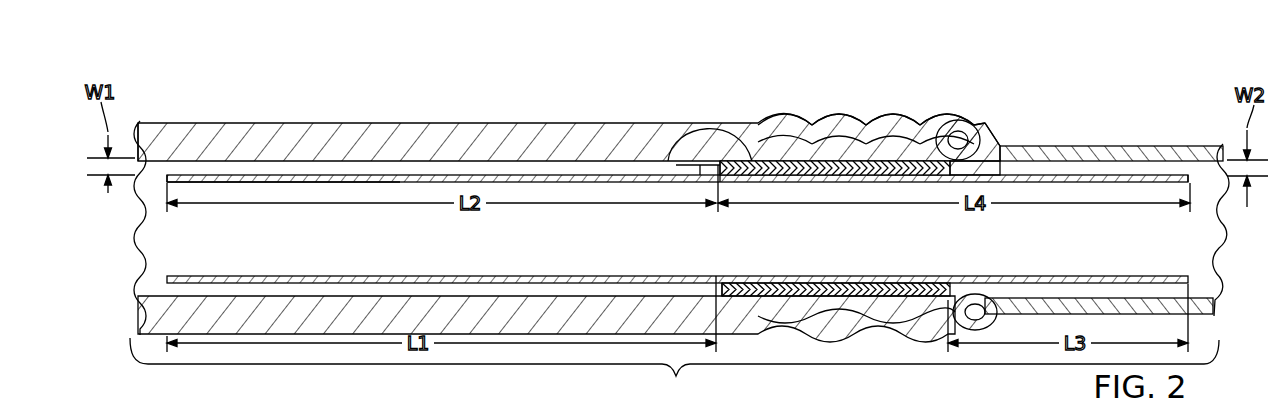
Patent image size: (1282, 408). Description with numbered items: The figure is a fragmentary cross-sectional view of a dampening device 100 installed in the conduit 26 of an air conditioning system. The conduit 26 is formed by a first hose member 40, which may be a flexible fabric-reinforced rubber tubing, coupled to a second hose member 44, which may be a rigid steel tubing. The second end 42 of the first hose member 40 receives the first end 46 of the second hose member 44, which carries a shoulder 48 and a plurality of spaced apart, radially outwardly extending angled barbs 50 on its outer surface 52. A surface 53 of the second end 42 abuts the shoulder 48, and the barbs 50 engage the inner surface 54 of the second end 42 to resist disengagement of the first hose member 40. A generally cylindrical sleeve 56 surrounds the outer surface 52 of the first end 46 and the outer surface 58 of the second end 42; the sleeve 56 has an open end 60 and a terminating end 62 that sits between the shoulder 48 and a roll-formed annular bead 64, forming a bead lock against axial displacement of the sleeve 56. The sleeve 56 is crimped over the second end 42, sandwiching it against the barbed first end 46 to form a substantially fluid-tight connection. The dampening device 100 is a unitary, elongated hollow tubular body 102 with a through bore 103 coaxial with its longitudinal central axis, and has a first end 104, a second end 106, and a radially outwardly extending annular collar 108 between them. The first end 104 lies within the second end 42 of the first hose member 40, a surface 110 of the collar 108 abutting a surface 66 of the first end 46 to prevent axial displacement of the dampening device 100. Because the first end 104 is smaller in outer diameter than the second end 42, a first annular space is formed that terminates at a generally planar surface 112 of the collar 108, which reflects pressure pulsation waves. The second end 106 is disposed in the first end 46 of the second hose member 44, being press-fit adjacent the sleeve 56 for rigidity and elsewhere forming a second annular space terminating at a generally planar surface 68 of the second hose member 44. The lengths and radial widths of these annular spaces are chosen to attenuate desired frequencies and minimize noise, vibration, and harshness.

The conduit 26 is at (674, 372).
The first hose member 40 is at (548, 140).
The second end of the first hose member 42 is at (785, 130).
The second hose member 44 is at (1093, 150).
The first end of the second hose member 46 is at (808, 124).
The shoulder 48 is at (922, 128).
The angled barbs 50 is at (832, 126).
The outer surface 52 is at (852, 126).
The surface of the second end 53 is at (965, 124).
The inner surface 54 is at (868, 124).
The sleeve 56 is at (893, 126).
The outer surface of the second end 58 is at (915, 124).
The open end 60 is at (768, 122).
The terminating end 62 is at (985, 128).
The roll-formed annular bead 64 is at (1003, 128).
The surface of the first end 66 is at (666, 150).
The surface of the first end 68 is at (1035, 140).
The dampening device 100 is at (278, 160).
The tubular body 102 is at (328, 173).
The through bore 103 is at (358, 182).
The first end of the body 104 is at (140, 160).
The second end of the body 106 is at (1200, 168).
The annular collar 108 is at (714, 160).
The surface of the collar 110 is at (735, 172).
The surface of the collar 112 is at (690, 162).